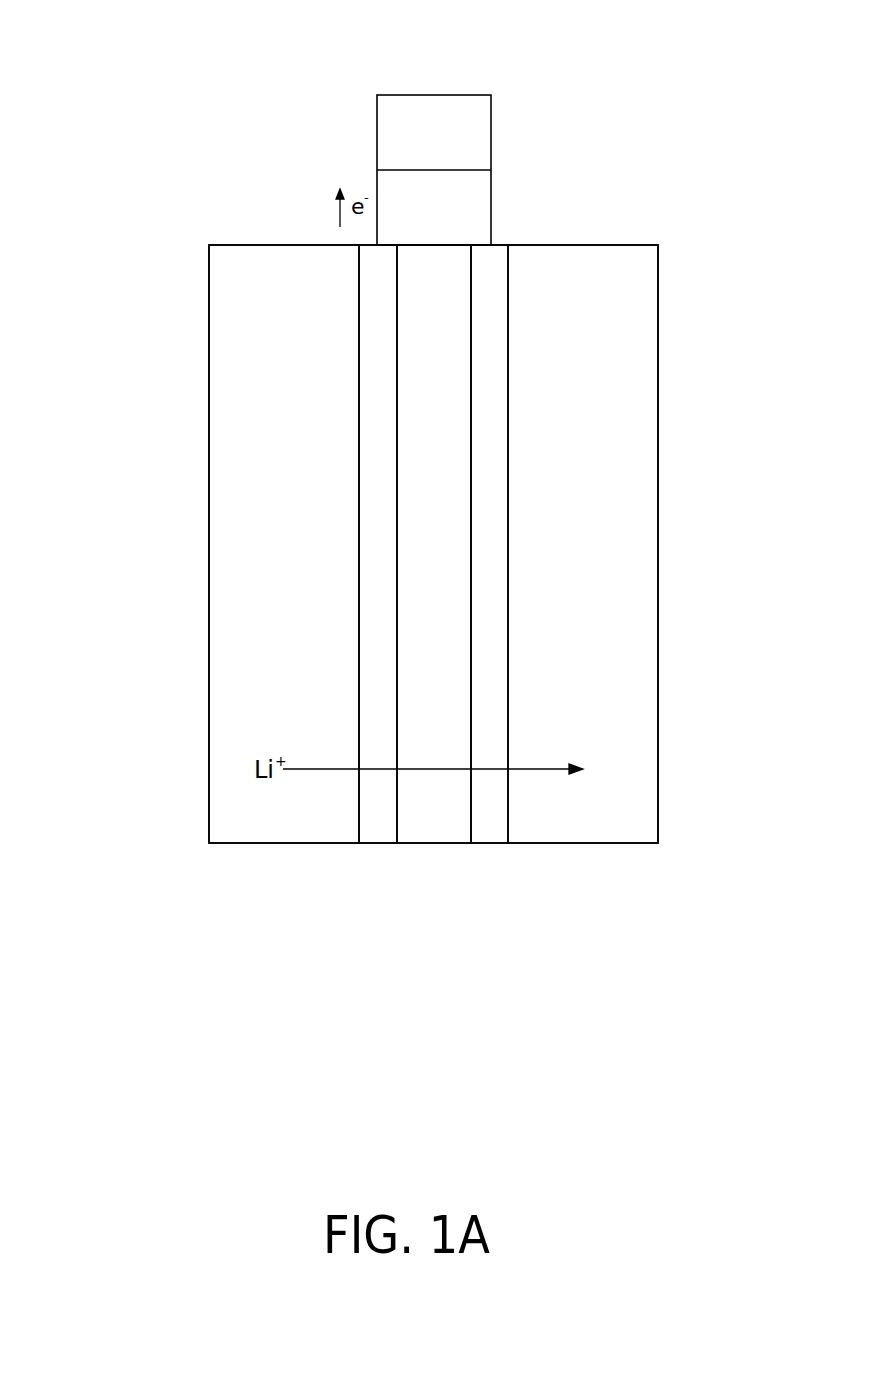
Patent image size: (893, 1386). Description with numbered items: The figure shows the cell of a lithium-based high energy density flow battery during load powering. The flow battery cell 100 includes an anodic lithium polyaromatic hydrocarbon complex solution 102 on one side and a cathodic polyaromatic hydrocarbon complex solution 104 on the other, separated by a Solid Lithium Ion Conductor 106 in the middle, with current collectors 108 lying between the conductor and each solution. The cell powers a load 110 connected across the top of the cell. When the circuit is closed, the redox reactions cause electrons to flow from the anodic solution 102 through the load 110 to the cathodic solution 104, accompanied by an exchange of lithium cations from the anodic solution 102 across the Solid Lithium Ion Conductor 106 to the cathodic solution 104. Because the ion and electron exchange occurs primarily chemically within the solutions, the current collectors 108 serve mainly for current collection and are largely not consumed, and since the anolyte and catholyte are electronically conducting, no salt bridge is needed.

The flow battery cell 100 is at (228, 863).
The anodic lithium polyaromatic hydrocarbon complex (Li-PAH_A) solution 102 is at (285, 243).
The cathodic polyaromatic hydrocarbon complex (PAH_B) solution 104 is at (585, 243).
The Solid Lithium Ion Conductor 106 is at (433, 845).
The current collectors 108 is at (377, 845).
The load 110 is at (433, 95).